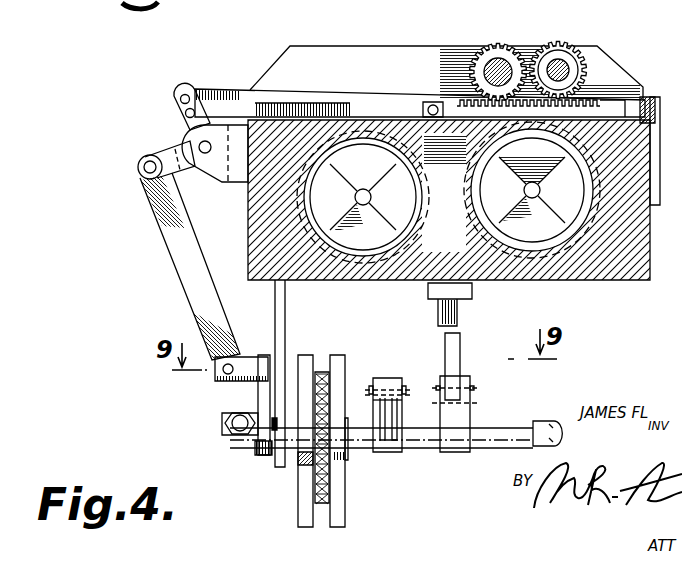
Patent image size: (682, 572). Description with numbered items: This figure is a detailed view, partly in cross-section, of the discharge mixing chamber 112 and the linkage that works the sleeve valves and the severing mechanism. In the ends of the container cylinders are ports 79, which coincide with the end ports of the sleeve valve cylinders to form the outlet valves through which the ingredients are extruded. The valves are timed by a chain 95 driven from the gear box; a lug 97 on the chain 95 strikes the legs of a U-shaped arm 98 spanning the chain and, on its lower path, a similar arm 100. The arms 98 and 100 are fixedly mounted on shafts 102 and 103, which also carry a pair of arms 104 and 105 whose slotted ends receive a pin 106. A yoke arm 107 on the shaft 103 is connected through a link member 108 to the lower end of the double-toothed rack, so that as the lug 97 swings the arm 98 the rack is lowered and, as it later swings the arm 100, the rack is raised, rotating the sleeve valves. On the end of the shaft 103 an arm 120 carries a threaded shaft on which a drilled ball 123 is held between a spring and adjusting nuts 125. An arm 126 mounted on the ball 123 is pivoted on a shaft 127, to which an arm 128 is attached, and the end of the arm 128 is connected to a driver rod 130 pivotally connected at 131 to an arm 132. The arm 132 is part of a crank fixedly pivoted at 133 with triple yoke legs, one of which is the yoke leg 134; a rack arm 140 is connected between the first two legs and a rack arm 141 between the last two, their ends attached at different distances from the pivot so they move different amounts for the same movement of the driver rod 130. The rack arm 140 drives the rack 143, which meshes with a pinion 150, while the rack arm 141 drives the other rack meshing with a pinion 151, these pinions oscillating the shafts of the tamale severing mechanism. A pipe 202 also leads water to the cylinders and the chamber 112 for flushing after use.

The port 79 is at (325, 213).
The chain 95 is at (308, 467).
The lug 97 is at (318, 367).
The U-shaped arm 98 is at (340, 380).
The arm 100 is at (340, 495).
The shaft 102 is at (543, 423).
The shaft 103 is at (425, 437).
The arm 104 is at (380, 400).
The arm 105 is at (390, 400).
The pin 106 is at (405, 391).
The yoke arm 107 is at (458, 411).
The link member 108 is at (458, 341).
The chamber 112 is at (485, 154).
The arm 120 is at (257, 443).
The drilled ball 123 is at (224, 432).
The adjusting nuts 125 is at (224, 418).
The arm 126 is at (258, 394).
The shaft 127 is at (277, 358).
The arm 128 is at (248, 357).
The driver rod 130 is at (173, 250).
The pivotal connection 131 is at (140, 163).
The arm 132 is at (163, 150).
The pivot 133 is at (208, 155).
The yoke leg 134 is at (173, 108).
The rack arm 140 is at (291, 112).
The rack arm 141 is at (232, 92).
The rack 143 is at (455, 108).
The pinion 150 is at (567, 47).
The pinion 151 is at (502, 48).
The pipe 202 is at (462, 308).